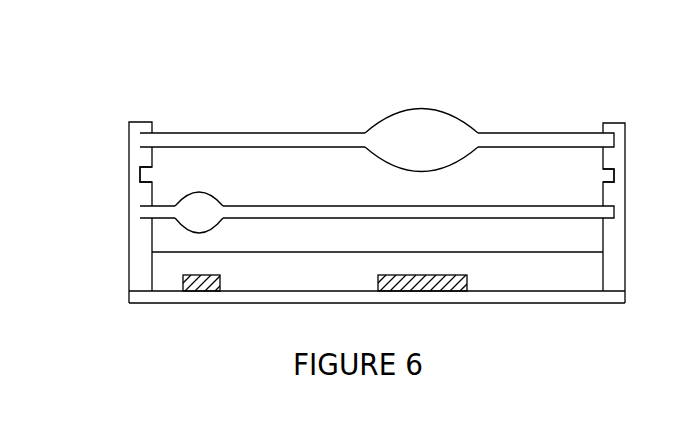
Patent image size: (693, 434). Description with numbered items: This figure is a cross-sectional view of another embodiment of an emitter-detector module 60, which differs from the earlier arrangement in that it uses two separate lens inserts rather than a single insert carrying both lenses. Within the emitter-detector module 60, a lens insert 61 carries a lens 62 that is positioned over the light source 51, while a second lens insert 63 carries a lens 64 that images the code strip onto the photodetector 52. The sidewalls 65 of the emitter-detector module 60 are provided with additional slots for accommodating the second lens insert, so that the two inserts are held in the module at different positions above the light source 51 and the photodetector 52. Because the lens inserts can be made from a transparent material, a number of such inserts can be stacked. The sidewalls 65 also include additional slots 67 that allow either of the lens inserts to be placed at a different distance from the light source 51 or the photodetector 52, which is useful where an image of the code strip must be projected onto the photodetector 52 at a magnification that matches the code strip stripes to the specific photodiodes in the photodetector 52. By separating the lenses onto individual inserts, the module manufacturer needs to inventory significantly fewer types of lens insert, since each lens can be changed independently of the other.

The emitter-detector module 60 is at (127, 53).
The light source 51 is at (190, 283).
The photodetector 52 is at (420, 282).
The lens insert 61 is at (377, 212).
The lens 62 is at (203, 221).
The lens insert 63 is at (377, 114).
The lens 64 is at (430, 128).
The sidewalls 65 is at (132, 239).
The additional slots 67 is at (140, 177).